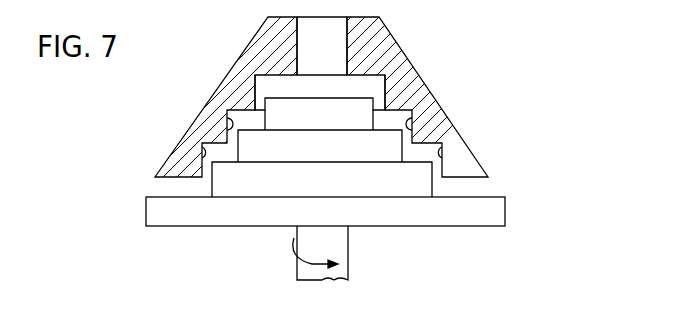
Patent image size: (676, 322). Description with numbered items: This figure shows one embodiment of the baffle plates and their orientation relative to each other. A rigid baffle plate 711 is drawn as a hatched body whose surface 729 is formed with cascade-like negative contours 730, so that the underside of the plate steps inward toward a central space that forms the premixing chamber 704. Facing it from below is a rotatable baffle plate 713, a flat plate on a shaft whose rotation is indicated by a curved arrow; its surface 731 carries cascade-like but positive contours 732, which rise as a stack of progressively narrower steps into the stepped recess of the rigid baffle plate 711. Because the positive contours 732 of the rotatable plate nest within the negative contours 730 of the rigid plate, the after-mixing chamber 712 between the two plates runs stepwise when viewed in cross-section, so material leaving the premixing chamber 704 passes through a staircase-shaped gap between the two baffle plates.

The premixing chamber 704 is at (347, 46).
The rigid baffle plate 711 is at (425, 104).
The after-mixing chamber 712 is at (372, 87).
The rotatable baffle plate 713 is at (490, 197).
The surface 729 is at (442, 153).
The cascade-like negative contours 730 is at (414, 128).
The surface 731 is at (210, 155).
The cascade-like positive contours 732 is at (248, 141).